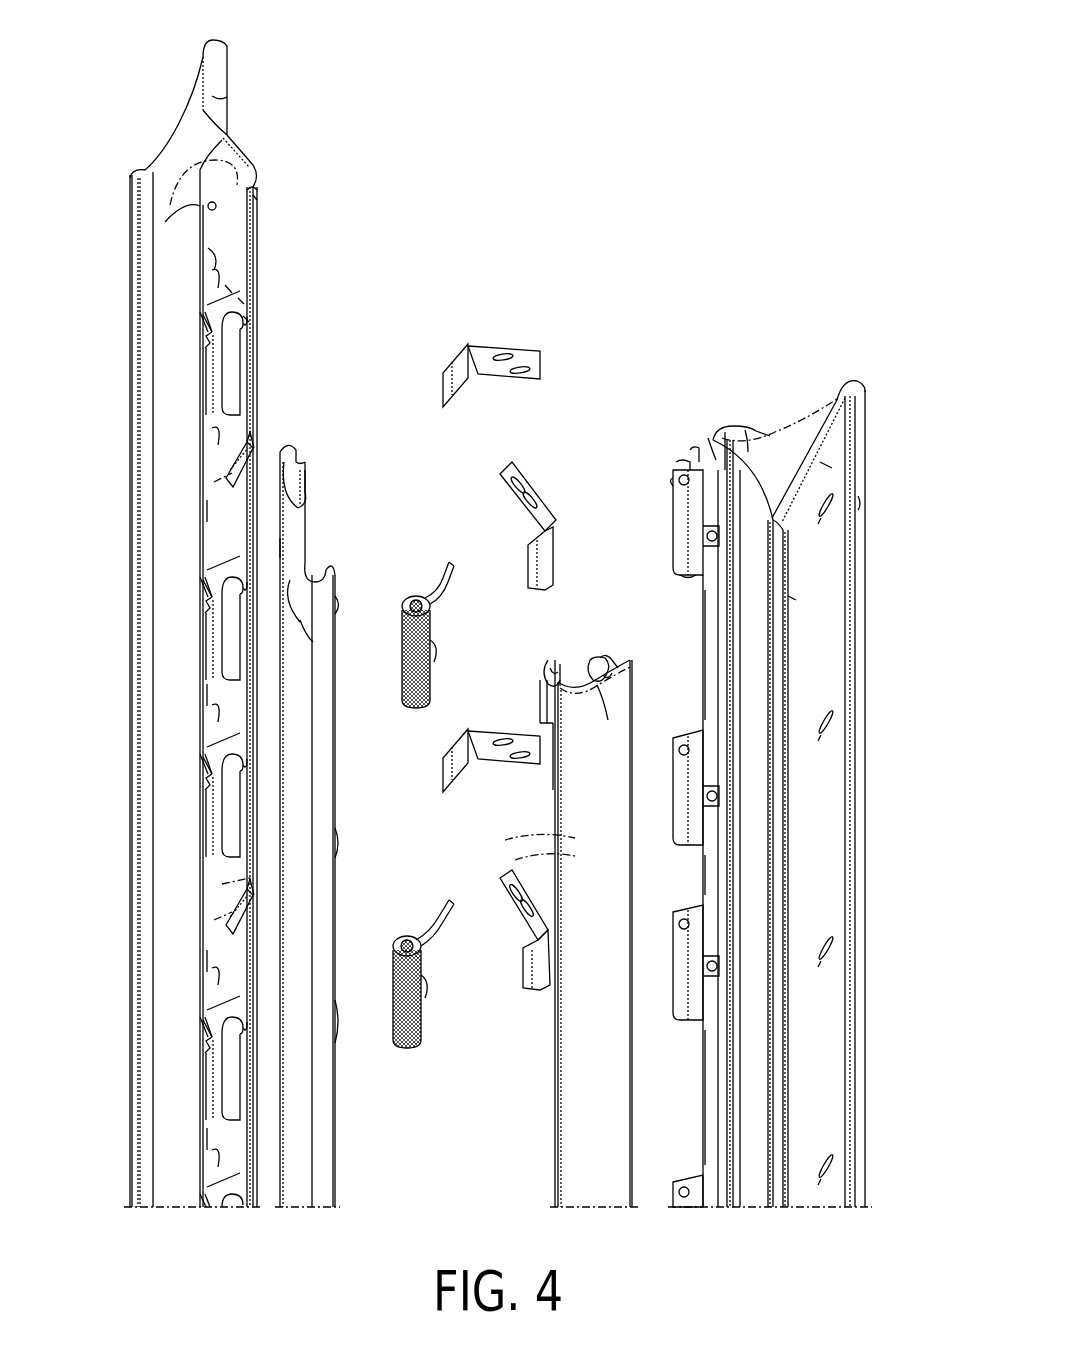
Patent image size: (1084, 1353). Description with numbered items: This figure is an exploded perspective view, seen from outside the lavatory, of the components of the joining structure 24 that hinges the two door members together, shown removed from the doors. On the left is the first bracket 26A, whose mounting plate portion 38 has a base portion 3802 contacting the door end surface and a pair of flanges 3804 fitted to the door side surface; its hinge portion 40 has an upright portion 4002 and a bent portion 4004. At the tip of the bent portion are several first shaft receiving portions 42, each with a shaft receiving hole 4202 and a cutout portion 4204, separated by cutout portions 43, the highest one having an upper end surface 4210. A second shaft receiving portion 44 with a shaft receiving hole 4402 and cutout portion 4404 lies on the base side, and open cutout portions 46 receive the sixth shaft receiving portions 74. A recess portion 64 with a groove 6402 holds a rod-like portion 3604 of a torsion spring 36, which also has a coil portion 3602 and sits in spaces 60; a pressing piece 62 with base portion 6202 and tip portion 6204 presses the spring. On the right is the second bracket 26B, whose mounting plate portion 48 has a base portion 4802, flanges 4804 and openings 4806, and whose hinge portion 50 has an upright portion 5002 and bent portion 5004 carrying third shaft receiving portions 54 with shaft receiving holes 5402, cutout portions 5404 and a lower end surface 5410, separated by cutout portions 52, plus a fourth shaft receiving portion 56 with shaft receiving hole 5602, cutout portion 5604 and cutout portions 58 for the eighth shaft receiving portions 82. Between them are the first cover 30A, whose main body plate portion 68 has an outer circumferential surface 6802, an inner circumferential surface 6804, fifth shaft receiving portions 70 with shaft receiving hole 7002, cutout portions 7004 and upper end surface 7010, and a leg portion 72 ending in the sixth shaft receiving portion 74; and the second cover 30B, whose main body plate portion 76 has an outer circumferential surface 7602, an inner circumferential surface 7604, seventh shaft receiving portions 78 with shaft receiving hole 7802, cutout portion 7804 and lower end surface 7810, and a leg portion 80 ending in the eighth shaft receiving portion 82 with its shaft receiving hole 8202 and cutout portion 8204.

The joining structure 24 is at (510, 78).
The first bracket 26A is at (255, 66).
The second bracket 26B is at (798, 326).
The first cover 30A is at (312, 430).
The second cover 30B is at (603, 602).
The torsion spring 36 is at (431, 818).
The coil portion 3602 is at (412, 1046).
The rod-like portion 3604 is at (427, 988).
The mounting plate portion 38 is at (214, 96).
The base portion 3802 is at (185, 108).
The flange 3804 is at (128, 205).
The hinge portion 40 is at (256, 170).
The upright portion 4002 is at (240, 128).
The bent portion 4004 is at (256, 200).
The first shaft receiving portion 42 is at (221, 1092).
The shaft receiving hole 4202 is at (226, 290).
The cutout portion 4204 is at (246, 318).
The upper end surface 4210 is at (240, 300).
The cutout portion 43 is at (214, 1160).
The second shaft receiving portion 44 is at (208, 1138).
The shaft receiving hole 4402 is at (205, 198).
The cutout portion 4404 is at (206, 207).
The cutout portion 46 is at (205, 1025).
The mounting plate portion 48 is at (837, 396).
The base portion 4802 is at (826, 466).
The flange 4804 is at (790, 598).
The slot 4806 is at (833, 1170).
The hinge portion 50 is at (713, 440).
The upright portion 5002 is at (725, 430).
The bent portion 5004 is at (708, 438).
The cutout portion 52 is at (683, 1085).
The third shaft receiving portion 54 is at (675, 1195).
The shaft receiving hole 5402 is at (688, 465).
The cutout portion 5404 is at (671, 480).
The lower end surface 5410 is at (688, 578).
The fourth shaft receiving portion 56 is at (781, 462).
The shaft receiving hole 5602 is at (695, 452).
The cutout portion 5604 is at (748, 430).
The cutout portion 58 is at (720, 966).
The space 60 is at (224, 884).
The pressing piece 62 is at (479, 622).
The base portion 6202 is at (506, 486).
The tip portion 6204 is at (528, 588).
The recess portion 64 is at (250, 892).
The groove 6402 is at (214, 920).
The main body plate portion 68 is at (282, 548).
The outer circumferential surface 6802 is at (306, 490).
The inner circumferential surface 6804 is at (304, 470).
The fifth shaft receiving portion 70 is at (326, 570).
The shaft receiving hole 7002 is at (295, 600).
The cutout portion 7004 is at (310, 520).
The upper end surface 7010 is at (296, 590).
The leg portion 72 is at (300, 455).
The sixth shaft receiving portion 74 is at (340, 1020).
The main body plate portion 76 is at (572, 857).
The outer circumferential surface 7602 is at (560, 835).
The inner circumferential surface 7604 is at (554, 786).
The seventh shaft receiving portion 78 is at (546, 670).
The shaft receiving hole 7802 is at (548, 670).
The cutout portion 7804 is at (560, 656).
The lower end surface 7810 is at (541, 720).
The leg portion 80 is at (612, 661).
The eighth shaft receiving portion 82 is at (606, 656).
The shaft receiving hole 8202 is at (609, 676).
The cutout portion 8204 is at (597, 686).